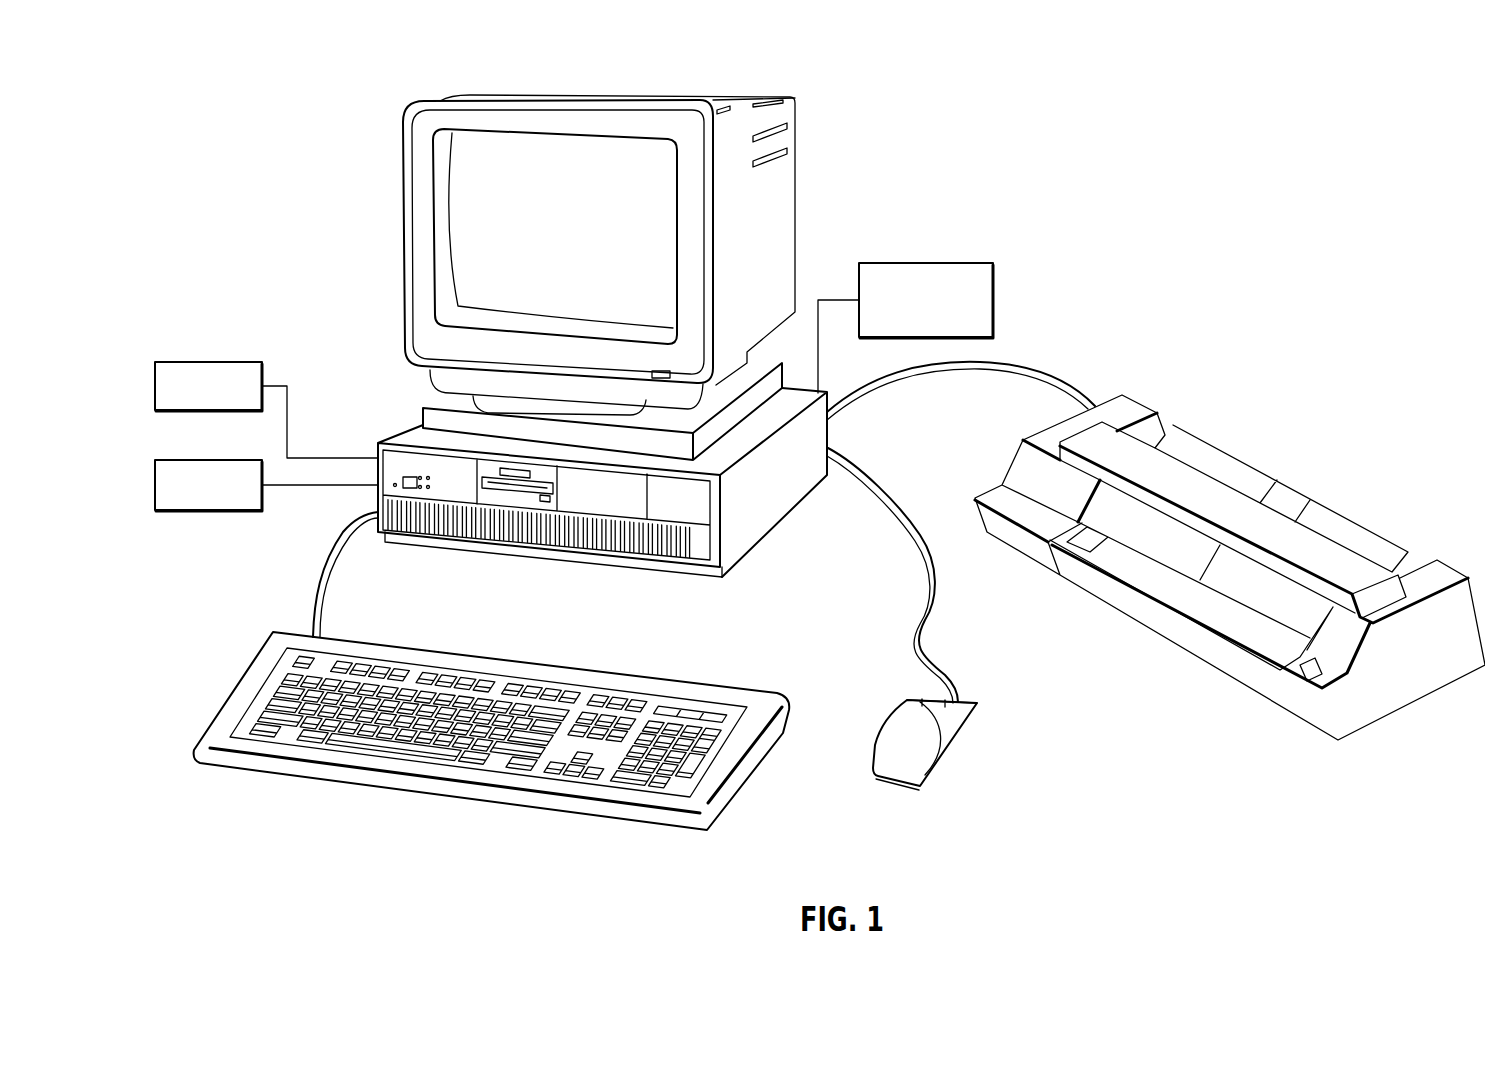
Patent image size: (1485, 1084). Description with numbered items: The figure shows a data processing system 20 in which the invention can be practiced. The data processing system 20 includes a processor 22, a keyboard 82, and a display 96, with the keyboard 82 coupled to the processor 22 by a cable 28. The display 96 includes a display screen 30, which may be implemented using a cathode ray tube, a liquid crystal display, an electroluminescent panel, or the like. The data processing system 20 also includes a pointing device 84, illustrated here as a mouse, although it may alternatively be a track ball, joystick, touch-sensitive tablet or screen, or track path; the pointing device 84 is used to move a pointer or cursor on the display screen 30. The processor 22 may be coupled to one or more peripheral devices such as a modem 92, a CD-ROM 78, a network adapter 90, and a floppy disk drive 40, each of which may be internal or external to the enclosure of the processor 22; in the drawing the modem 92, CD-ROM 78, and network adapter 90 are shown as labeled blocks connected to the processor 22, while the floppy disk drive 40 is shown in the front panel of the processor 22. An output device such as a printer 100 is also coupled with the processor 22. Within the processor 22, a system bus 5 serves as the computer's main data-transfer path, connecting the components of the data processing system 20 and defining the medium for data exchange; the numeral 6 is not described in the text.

The data processing system 20 is at (1045, 200).
The display 96 is at (390, 226).
The display screen 30 is at (522, 266).
The processor 22 is at (732, 602).
The system bus 5 is at (652, 518).
The ventilation grille 6 is at (640, 545).
The floppy disk drive 40 is at (516, 493).
The keyboard 82 is at (429, 810).
The cable 28 is at (320, 562).
The pointing device 84 is at (966, 738).
The printer 100 is at (1152, 386).
The modem 92 is at (213, 362).
The CD-ROM 78 is at (220, 513).
The network adapter 90 is at (918, 262).